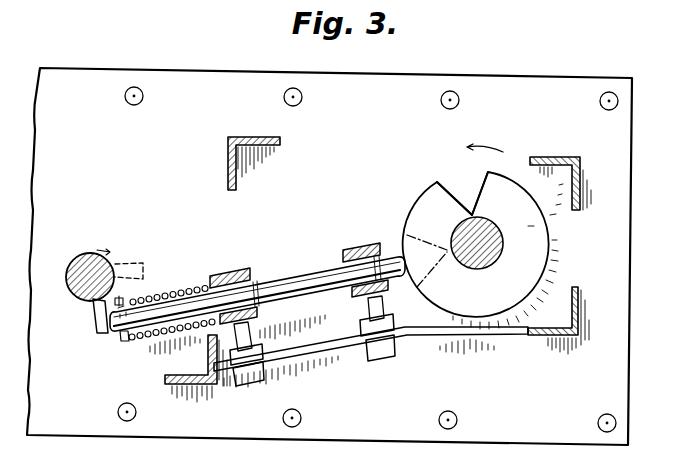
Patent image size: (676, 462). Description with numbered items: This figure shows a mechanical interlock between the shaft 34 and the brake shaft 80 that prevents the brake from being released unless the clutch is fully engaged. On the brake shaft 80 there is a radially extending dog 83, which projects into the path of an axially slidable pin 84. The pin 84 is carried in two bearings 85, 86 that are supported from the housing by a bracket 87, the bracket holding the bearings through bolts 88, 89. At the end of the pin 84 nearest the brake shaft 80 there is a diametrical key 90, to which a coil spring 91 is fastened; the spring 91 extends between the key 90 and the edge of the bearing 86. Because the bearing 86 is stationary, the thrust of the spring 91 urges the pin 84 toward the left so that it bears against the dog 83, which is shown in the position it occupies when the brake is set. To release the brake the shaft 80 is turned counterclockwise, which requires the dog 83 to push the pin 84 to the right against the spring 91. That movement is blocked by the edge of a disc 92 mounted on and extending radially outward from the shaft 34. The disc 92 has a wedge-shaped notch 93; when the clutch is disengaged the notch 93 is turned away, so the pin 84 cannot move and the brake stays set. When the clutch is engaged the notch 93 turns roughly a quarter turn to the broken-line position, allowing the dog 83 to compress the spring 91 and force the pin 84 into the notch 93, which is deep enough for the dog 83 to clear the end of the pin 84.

The brake shaft 80 is at (87, 255).
The dog 83 is at (100, 334).
The pin 84 is at (308, 270).
The bearing 85 is at (363, 247).
The bearing 86 is at (225, 274).
The bracket 87 is at (314, 351).
The bolt 88 is at (253, 334).
The bolt 89 is at (390, 297).
The key 90 is at (128, 341).
The coil spring 91 is at (163, 292).
The disc 92 is at (538, 242).
The notch 93 is at (440, 180).
The shaft 34 is at (483, 260).